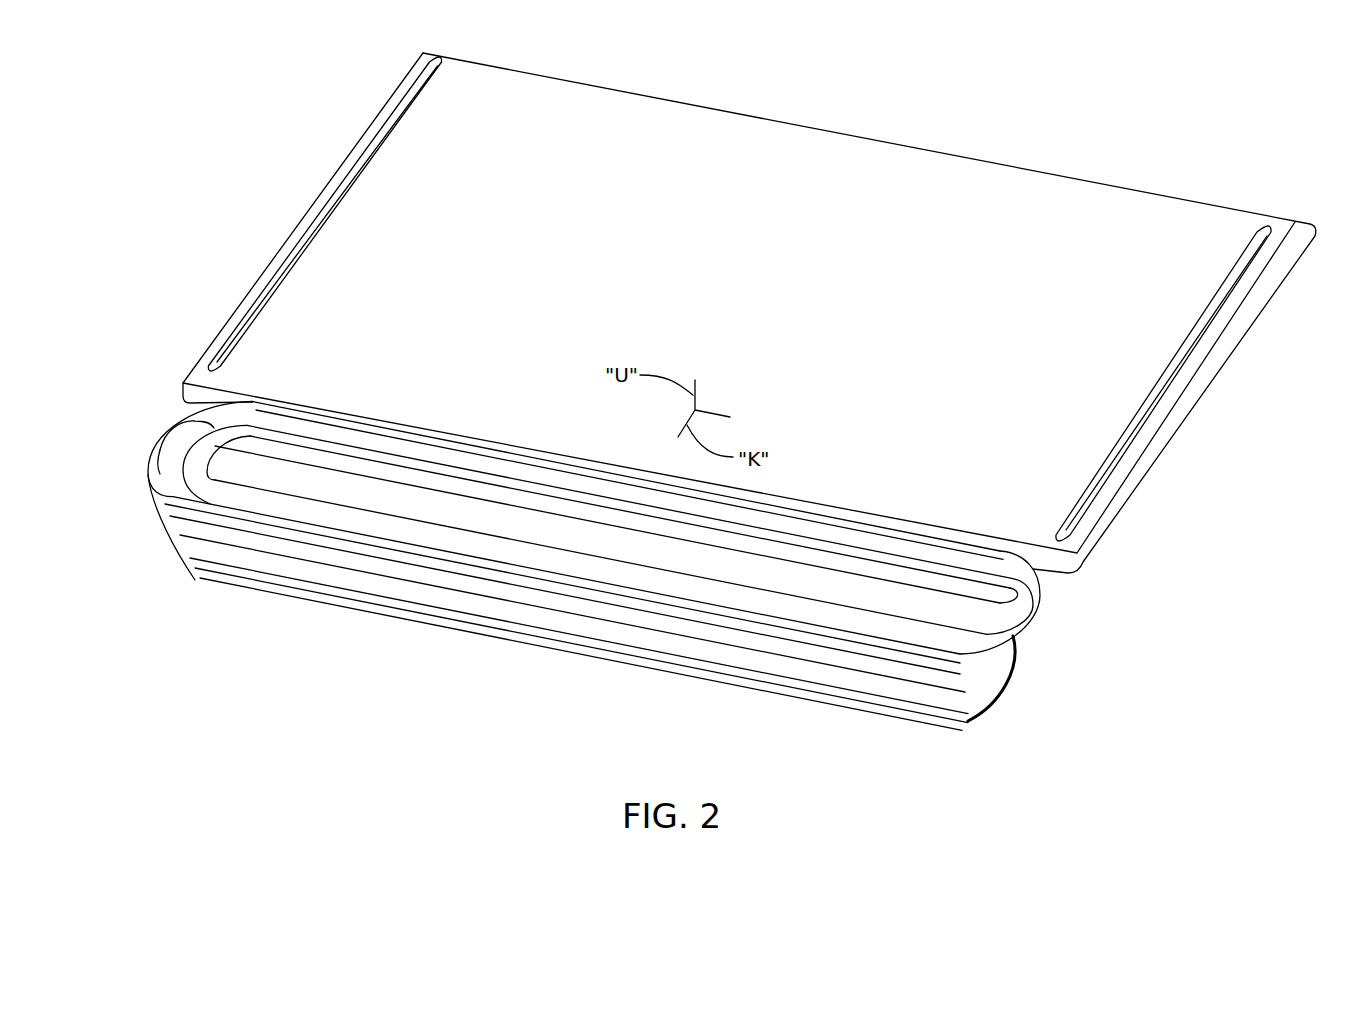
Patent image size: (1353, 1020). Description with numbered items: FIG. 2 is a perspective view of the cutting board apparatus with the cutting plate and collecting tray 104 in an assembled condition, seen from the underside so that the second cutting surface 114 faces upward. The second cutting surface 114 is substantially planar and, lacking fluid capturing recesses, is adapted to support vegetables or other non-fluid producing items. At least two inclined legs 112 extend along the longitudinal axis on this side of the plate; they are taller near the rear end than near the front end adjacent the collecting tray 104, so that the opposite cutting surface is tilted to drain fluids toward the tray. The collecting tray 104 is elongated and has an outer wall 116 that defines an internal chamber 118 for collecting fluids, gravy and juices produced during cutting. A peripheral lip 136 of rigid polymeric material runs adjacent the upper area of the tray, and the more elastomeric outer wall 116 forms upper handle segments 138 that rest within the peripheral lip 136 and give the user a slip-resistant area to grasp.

The particle collecting tray 104 is at (405, 477).
The inclined legs 112 is at (312, 222).
The second cutting surface 114 is at (707, 217).
The outer wall 116 is at (445, 598).
The internal chamber 118 is at (720, 570).
The peripheral lip 136 is at (884, 641).
The upper handle segments 138 is at (176, 448).